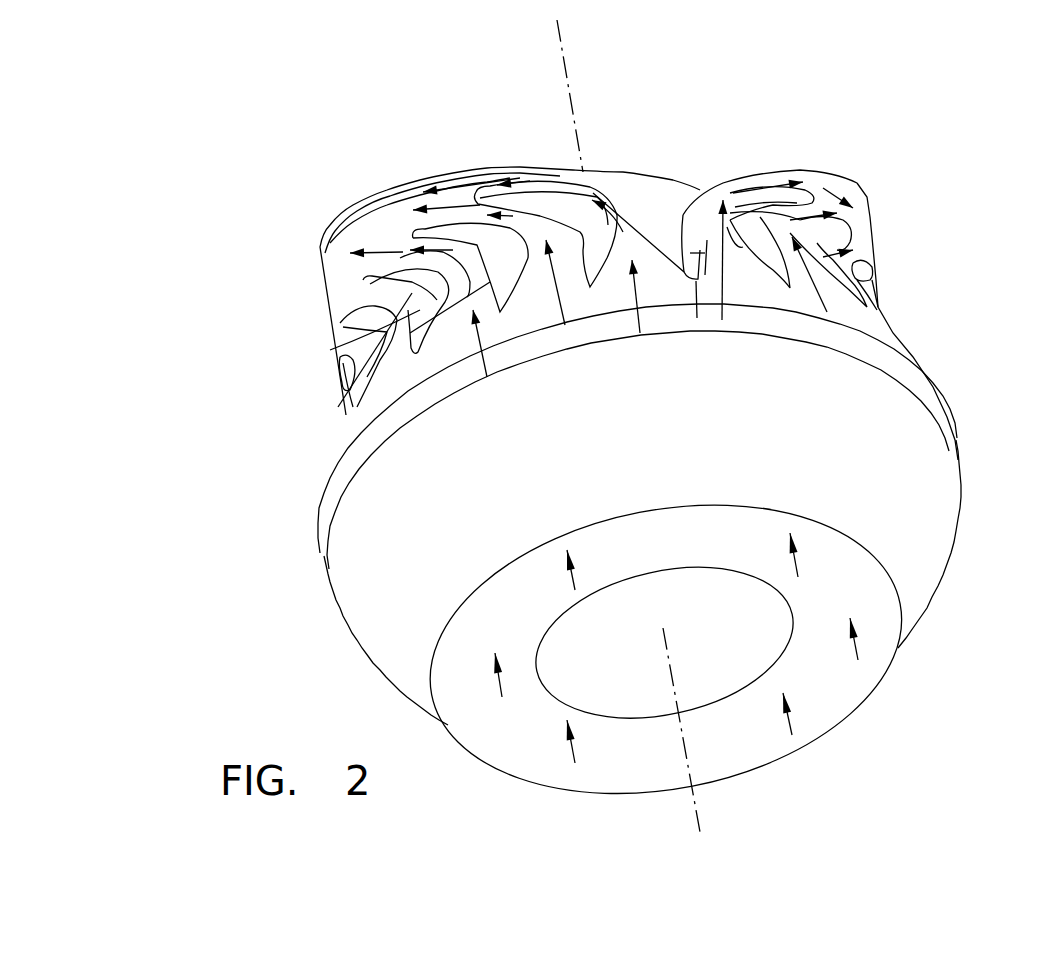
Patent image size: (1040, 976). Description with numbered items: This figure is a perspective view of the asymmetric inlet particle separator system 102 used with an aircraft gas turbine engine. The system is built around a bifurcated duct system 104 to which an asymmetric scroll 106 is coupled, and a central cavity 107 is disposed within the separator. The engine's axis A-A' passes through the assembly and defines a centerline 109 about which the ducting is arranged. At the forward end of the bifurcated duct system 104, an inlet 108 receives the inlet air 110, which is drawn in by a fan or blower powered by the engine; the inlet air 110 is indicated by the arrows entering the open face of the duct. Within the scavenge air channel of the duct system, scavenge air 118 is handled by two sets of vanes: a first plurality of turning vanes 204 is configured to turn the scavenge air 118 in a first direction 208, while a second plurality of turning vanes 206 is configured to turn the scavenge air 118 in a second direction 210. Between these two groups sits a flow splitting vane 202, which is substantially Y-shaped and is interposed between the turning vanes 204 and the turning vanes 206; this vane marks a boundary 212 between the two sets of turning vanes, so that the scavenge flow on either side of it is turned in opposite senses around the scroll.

The asymmetric inlet particle separator system 102 is at (908, 152).
The bifurcated duct system 104 is at (320, 296).
The asymmetric scroll 106 is at (435, 184).
The central cavity 107 is at (886, 643).
The inlet 108 is at (805, 670).
The centerline 109 is at (702, 797).
The inlet air 110 is at (574, 581).
The scavenge air 118 is at (590, 212).
The flow splitting vane 202 is at (673, 250).
The first plurality of turning vanes 204 is at (357, 363).
The second plurality of turning vanes 206 is at (879, 211).
The first direction 208 is at (330, 252).
The second direction 210 is at (874, 207).
The boundary 212 is at (695, 282).